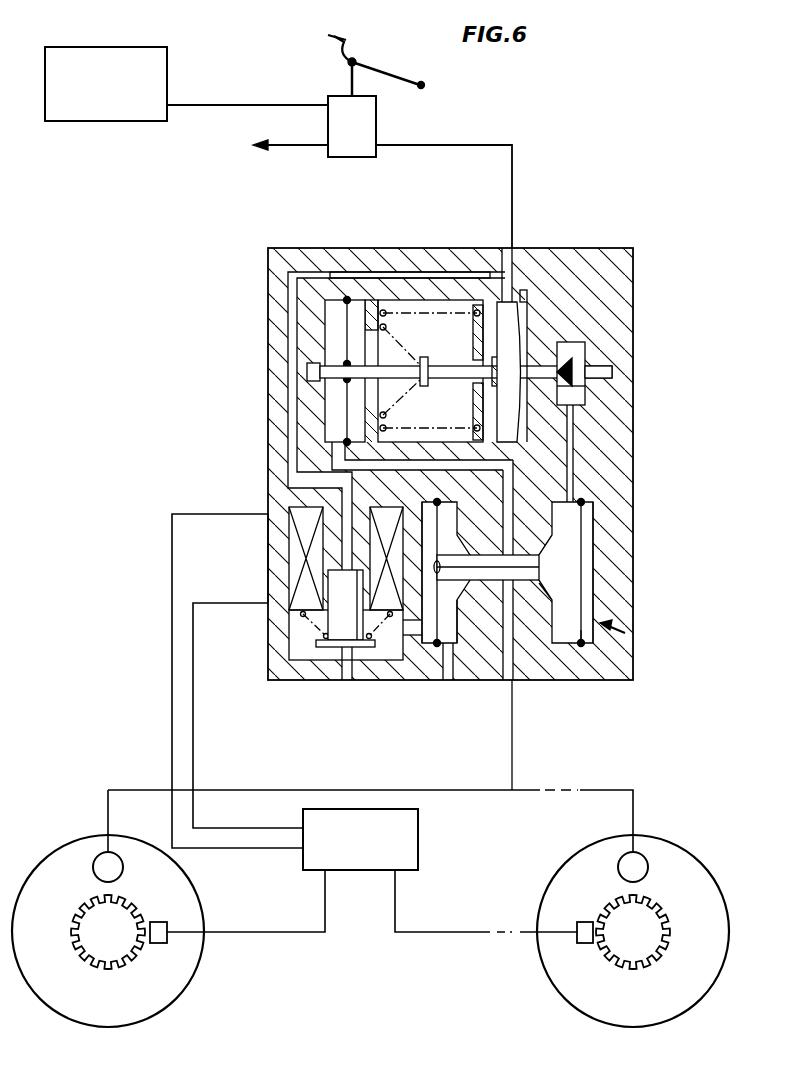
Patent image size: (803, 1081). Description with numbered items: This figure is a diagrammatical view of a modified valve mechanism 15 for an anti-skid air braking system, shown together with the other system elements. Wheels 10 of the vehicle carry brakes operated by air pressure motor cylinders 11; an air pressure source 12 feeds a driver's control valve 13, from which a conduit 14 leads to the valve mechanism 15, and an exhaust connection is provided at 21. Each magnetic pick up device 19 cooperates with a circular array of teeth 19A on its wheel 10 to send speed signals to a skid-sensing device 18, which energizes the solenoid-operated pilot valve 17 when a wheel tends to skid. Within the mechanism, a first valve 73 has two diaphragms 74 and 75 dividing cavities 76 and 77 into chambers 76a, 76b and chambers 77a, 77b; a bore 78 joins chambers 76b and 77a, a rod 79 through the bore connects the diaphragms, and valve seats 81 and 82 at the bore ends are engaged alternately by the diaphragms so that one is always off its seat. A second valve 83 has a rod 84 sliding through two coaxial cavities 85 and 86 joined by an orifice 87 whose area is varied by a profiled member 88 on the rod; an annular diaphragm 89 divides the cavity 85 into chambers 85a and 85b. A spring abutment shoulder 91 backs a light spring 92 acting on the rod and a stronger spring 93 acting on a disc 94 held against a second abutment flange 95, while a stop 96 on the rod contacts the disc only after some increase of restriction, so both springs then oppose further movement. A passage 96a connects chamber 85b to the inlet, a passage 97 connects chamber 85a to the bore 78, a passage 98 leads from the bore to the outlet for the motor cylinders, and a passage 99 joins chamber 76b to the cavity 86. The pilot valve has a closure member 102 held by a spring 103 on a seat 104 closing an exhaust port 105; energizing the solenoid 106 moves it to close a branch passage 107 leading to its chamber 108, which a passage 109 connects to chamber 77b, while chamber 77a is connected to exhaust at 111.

The wheels 10 is at (176, 952).
The air pressure motor cylinders 11 is at (113, 870).
The air pressure source 12 is at (116, 112).
The driver's control valve 13 is at (377, 130).
The conduit 14 is at (453, 148).
The valve mechanism 15 is at (633, 326).
The solenoid-operated pilot valve 17 is at (268, 619).
The skid-sensing device 18 is at (412, 848).
The magnetic pick up devices 19 is at (160, 922).
The circular array of teeth 19A is at (122, 965).
The exhaust connection 21 is at (298, 148).
The first valve 73 is at (625, 633).
The diaphragm 74 is at (583, 640).
The diaphragm 75 is at (437, 648).
The cavity 76 is at (600, 612).
The chamber 76a is at (588, 522).
The chamber 76b is at (572, 532).
The cavity 77 is at (447, 582).
The chamber 77a is at (450, 520).
The chamber 77b is at (430, 520).
The bore 78 is at (532, 553).
The rod 79 is at (472, 556).
The valve seat 81 is at (554, 592).
The valve seat 82 is at (450, 615).
The second valve 83 is at (416, 285).
The rod 84 is at (520, 372).
The cavity 85 is at (420, 296).
The chamber 85a is at (332, 318).
The chamber 85b is at (460, 300).
The cavity 86 is at (587, 360).
The orifice 87 is at (565, 368).
The profiled member 88 is at (575, 390).
The annular diaphragm 89 is at (312, 376).
The spring abutment shoulder 91 is at (372, 418).
The spring 92 is at (410, 396).
The spring 93 is at (375, 292).
The disc 94 is at (474, 336).
The second abutment flange 95 is at (496, 298).
The stop 96 is at (524, 380).
The passage 96a is at (518, 290).
The passage 97 is at (372, 468).
The passage 98 is at (514, 682).
The passage 99 is at (574, 482).
The closure member 102 is at (332, 660).
The spring 103 is at (288, 650).
The seat 104 is at (343, 680).
The exhaust port 105 is at (350, 655).
The solenoid 106 is at (290, 562).
The branch passage 107 is at (290, 470).
The chamber 108 is at (298, 660).
The passage 109 is at (414, 635).
The exhaust 111 is at (449, 668).